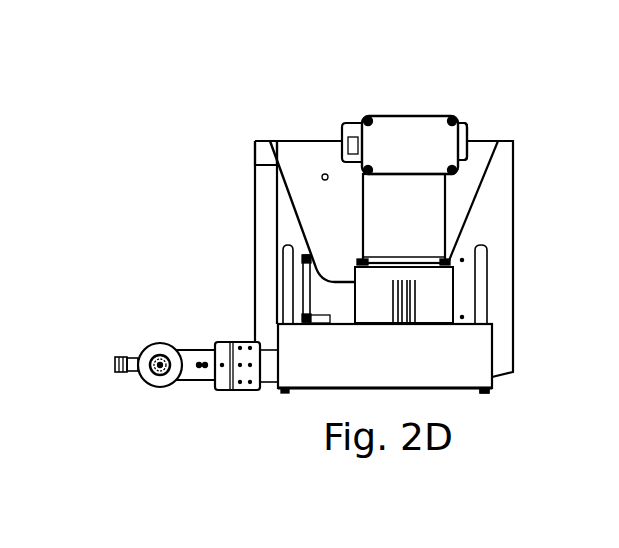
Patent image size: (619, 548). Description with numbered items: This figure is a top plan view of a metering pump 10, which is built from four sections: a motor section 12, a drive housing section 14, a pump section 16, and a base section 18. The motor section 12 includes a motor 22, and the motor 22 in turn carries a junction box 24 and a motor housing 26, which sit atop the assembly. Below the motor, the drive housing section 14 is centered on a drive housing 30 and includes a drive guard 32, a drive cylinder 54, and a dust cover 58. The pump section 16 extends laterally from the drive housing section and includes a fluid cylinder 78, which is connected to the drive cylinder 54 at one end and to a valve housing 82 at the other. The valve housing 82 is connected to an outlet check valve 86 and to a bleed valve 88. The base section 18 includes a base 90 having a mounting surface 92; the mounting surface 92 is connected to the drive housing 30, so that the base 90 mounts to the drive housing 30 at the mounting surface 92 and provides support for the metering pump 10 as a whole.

The metering pump 10 is at (558, 110).
The motor section 12 is at (455, 110).
The drive housing section 14 is at (492, 402).
The pump section 16 is at (181, 344).
The base section 18 is at (530, 224).
The motor 22 is at (351, 203).
The junction box 24 is at (389, 123).
The motor housing 26 is at (447, 200).
The drive housing 30 is at (480, 347).
The drive guard 32 is at (475, 394).
The drive cylinder 54 is at (268, 392).
The dust cover 58 is at (245, 392).
The fluid cylinder 78 is at (201, 383).
The valve housing 82 is at (142, 385).
The outlet check valve 86 is at (160, 380).
The bleed valve 88 is at (112, 352).
The base 90 is at (254, 150).
The mounting surface 92 is at (338, 288).